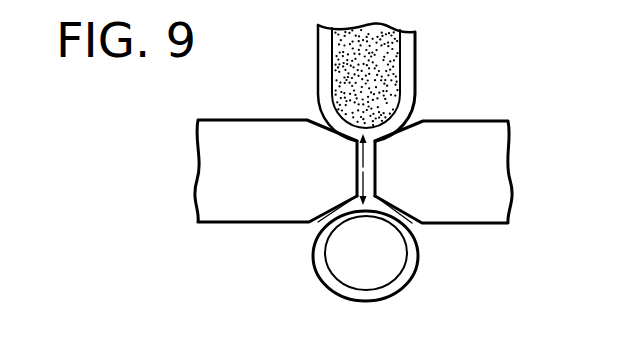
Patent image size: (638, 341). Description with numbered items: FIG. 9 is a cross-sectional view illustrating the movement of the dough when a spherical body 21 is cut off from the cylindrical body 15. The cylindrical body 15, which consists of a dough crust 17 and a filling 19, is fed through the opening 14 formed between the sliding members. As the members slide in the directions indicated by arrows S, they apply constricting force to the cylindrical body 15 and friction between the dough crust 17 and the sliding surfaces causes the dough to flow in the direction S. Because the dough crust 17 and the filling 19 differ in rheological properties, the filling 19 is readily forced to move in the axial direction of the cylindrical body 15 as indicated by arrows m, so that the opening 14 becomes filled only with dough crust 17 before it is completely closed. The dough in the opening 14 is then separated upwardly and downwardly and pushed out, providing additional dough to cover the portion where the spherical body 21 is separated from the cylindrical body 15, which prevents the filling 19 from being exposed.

The sliding direction arrows S is at (280, 174).
The opening 14 is at (368, 172).
The cylindrical body 15 is at (369, 22).
The dough crust 17 is at (408, 46).
The filling 19 is at (380, 77).
The spherical body 21 is at (368, 305).
The filling movement arrows m is at (372, 156).